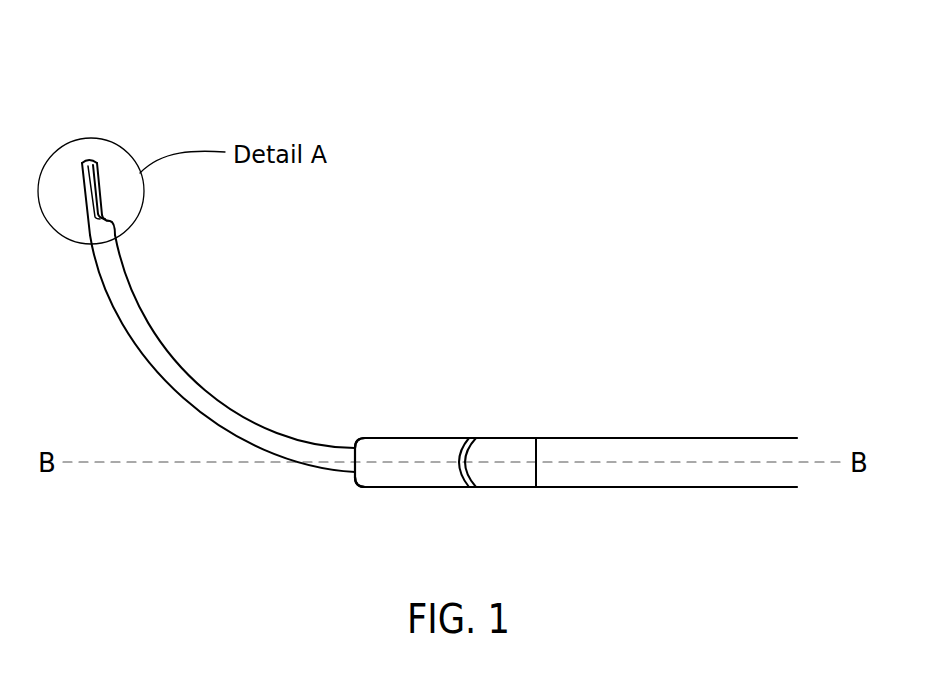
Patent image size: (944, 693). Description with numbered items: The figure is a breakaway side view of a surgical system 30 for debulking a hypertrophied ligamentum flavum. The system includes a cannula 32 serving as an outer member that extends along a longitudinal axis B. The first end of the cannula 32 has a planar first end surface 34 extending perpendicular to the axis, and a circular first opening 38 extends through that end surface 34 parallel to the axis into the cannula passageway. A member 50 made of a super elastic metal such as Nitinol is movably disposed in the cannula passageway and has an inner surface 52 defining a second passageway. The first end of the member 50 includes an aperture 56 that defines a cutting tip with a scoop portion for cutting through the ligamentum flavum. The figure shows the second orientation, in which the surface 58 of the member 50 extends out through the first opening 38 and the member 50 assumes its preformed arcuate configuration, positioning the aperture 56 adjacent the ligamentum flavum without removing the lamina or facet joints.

The surgical system 30 is at (494, 280).
The cannula 32 is at (596, 407).
The first end surface 34 is at (358, 437).
The first opening 38 is at (355, 483).
The member 50 is at (123, 343).
The inner surface 52 is at (100, 167).
The aperture 56 is at (112, 208).
The surface 58 is at (82, 160).